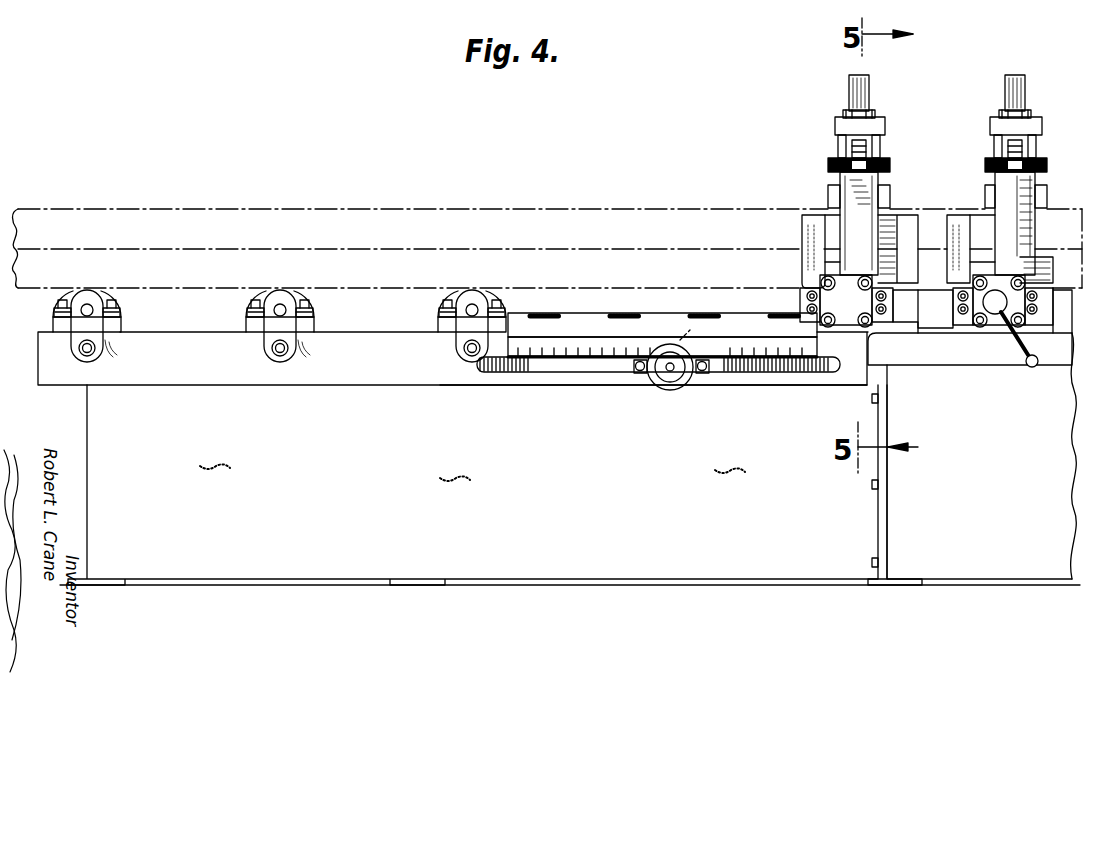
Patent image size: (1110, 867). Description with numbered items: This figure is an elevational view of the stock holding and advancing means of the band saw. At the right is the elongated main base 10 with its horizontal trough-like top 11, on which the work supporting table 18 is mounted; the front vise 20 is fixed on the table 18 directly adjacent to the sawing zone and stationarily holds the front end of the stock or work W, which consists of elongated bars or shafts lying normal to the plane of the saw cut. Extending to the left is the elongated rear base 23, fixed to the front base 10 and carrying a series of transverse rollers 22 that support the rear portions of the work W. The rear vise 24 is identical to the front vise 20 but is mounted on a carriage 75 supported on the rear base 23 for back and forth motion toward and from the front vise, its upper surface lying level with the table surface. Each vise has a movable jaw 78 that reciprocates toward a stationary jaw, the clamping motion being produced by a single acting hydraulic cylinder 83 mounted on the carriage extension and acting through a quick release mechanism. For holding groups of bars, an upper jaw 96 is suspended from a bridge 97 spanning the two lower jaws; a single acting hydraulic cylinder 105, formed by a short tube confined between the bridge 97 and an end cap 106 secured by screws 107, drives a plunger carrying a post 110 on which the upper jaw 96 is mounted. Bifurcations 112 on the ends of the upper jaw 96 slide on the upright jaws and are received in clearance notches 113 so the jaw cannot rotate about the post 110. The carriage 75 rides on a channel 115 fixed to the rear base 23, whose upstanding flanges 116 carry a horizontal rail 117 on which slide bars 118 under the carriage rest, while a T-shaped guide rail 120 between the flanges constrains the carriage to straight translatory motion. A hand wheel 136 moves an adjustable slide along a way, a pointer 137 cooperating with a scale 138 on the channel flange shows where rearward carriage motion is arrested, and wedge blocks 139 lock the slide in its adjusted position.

The main base 10 is at (1022, 456).
The trough-like top 11 is at (968, 365).
The work supporting table 18 is at (936, 328).
The front vise 20 is at (972, 185).
The transverse rollers 22 is at (103, 295).
The rear base 23 is at (555, 501).
The rear vise 24 is at (803, 186).
The carriage 75 is at (802, 292).
The movable jaw 78 is at (800, 272).
The single acting hydraulic cylinder 83 is at (848, 318).
The upper jaw 96 is at (828, 190).
The bridge 97 is at (890, 162).
The single acting hydraulic cylinder 105 is at (985, 105).
The end cap 106 is at (835, 124).
The screws 107 is at (880, 140).
The post 110 is at (852, 90).
The bifurcations 112 is at (828, 198).
The clearance notches 113 is at (812, 238).
The channel 115 is at (385, 365).
The flanges 116 is at (437, 365).
The horizontal rail 117 is at (548, 300).
The slide bars 118 is at (803, 316).
The guide rail 120 is at (619, 318).
The hand wheel 136 is at (668, 390).
The pointer 137 is at (690, 330).
The scale 138 is at (578, 362).
The wedge blocks 139 is at (640, 373).
The work W is at (612, 238).